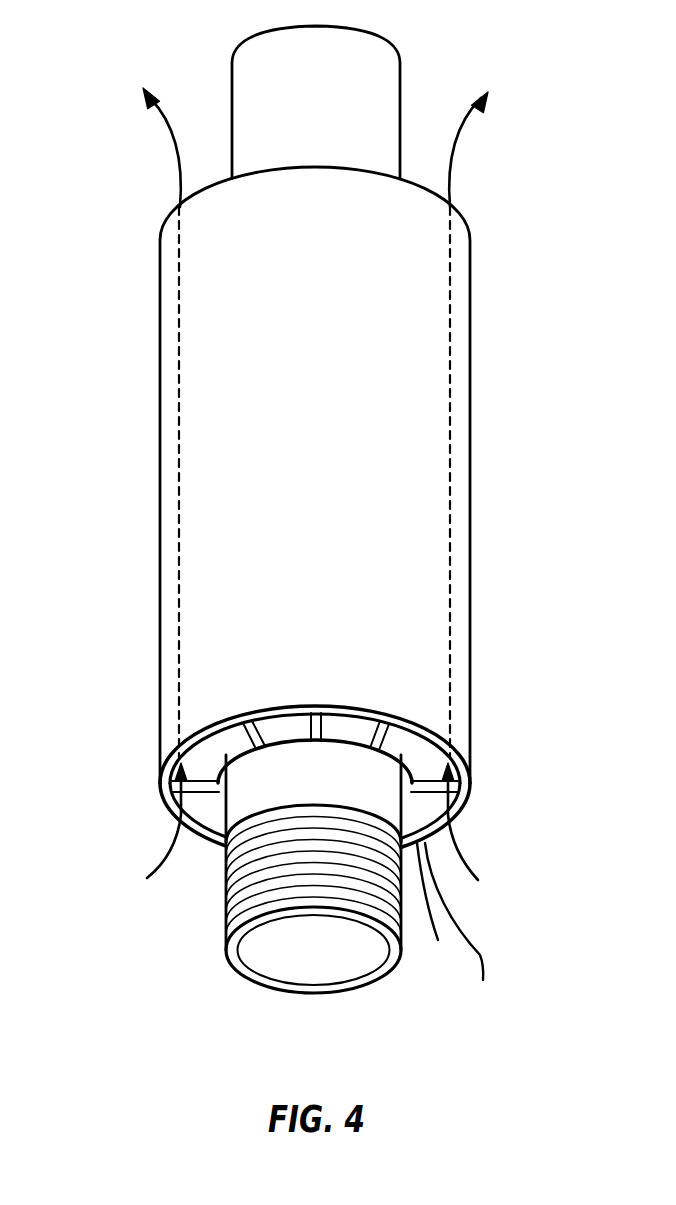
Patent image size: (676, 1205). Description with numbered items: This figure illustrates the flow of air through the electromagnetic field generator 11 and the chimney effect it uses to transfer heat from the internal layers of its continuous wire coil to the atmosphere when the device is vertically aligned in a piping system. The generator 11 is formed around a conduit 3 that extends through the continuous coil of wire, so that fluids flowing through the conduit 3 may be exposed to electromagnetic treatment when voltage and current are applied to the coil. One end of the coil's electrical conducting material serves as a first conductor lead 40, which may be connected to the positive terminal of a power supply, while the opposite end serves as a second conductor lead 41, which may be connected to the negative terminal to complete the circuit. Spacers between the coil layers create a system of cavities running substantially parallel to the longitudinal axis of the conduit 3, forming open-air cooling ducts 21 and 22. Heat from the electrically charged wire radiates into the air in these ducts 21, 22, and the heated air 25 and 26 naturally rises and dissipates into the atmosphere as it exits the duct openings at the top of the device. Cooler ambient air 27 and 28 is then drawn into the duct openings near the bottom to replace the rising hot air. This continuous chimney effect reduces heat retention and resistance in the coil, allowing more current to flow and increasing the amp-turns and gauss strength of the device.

The conduit 3 is at (328, 115).
The electromagnetic field generator 11 is at (342, 483).
The open-air cooling duct 21 is at (207, 808).
The open-air cooling duct 22 is at (187, 810).
The heated air 25 is at (172, 145).
The heated air 26 is at (467, 130).
The cooler ambient air 27 is at (157, 860).
The cooler ambient air 28 is at (463, 848).
The first conductor lead 40 is at (445, 915).
The second conductor lead 41 is at (483, 955).